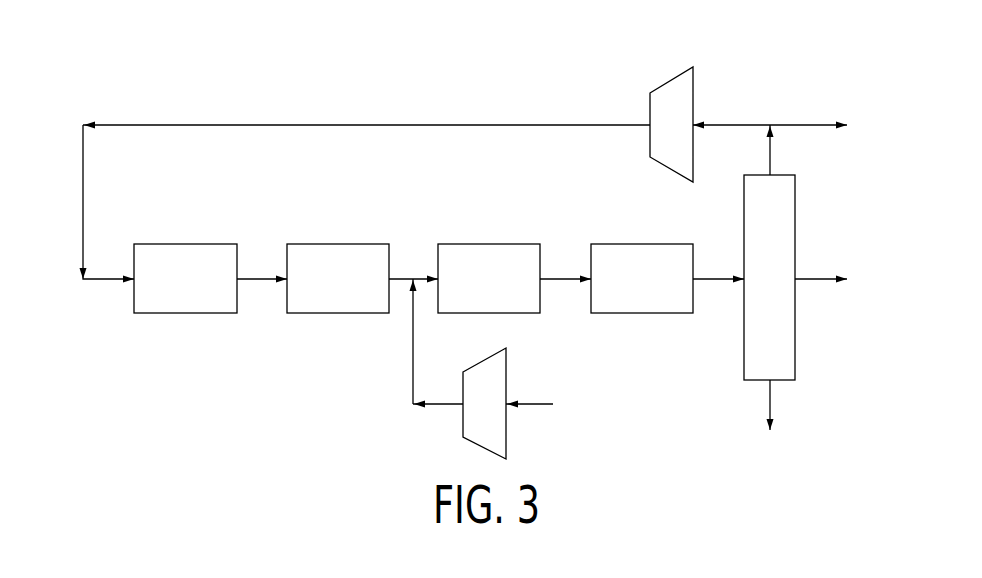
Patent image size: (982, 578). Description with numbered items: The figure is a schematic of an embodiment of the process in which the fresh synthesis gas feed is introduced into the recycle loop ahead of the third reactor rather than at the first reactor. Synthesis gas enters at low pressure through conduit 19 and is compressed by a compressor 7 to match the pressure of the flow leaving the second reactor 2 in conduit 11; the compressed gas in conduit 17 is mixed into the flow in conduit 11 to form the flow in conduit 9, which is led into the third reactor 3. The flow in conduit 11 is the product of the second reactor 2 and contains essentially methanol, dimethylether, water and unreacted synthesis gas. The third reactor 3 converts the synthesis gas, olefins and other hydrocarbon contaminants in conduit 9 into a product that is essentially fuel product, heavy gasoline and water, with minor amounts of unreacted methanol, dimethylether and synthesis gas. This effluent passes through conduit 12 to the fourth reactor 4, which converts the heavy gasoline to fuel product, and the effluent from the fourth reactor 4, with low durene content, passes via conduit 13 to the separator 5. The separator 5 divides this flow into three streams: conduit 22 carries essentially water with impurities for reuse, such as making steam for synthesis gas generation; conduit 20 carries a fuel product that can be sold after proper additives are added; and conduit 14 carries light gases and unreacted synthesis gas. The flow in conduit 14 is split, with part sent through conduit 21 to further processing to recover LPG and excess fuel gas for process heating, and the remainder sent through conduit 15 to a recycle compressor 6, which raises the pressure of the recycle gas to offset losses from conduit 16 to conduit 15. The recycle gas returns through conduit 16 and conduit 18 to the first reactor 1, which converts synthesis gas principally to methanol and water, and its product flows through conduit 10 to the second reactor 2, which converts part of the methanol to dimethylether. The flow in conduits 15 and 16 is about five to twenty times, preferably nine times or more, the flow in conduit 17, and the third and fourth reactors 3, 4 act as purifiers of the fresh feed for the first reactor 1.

The first reactor 1 is at (193, 291).
The second reactor 2 is at (345, 291).
The third reactor 3 is at (496, 291).
The fourth reactor 4 is at (649, 291).
The separator 5 is at (777, 291).
The recycle compressor 6 is at (678, 137).
The compressor 7 is at (491, 416).
The conduit 9 is at (422, 276).
The conduit 10 is at (262, 277).
The conduit 11 is at (397, 280).
The conduit 12 is at (563, 278).
The conduit 13 is at (712, 278).
The conduit 14 is at (771, 160).
The conduit 15 is at (725, 123).
The conduit 16 is at (242, 123).
The conduit 17 is at (434, 406).
The conduit 18 is at (108, 278).
The conduit 19 is at (538, 403).
The conduit 20 is at (811, 276).
The conduit 21 is at (800, 123).
The conduit 22 is at (771, 396).